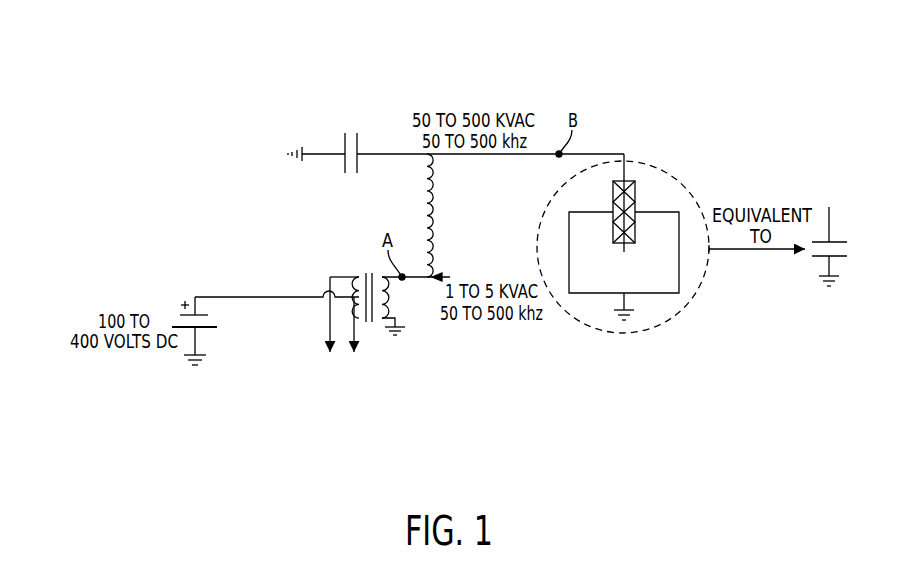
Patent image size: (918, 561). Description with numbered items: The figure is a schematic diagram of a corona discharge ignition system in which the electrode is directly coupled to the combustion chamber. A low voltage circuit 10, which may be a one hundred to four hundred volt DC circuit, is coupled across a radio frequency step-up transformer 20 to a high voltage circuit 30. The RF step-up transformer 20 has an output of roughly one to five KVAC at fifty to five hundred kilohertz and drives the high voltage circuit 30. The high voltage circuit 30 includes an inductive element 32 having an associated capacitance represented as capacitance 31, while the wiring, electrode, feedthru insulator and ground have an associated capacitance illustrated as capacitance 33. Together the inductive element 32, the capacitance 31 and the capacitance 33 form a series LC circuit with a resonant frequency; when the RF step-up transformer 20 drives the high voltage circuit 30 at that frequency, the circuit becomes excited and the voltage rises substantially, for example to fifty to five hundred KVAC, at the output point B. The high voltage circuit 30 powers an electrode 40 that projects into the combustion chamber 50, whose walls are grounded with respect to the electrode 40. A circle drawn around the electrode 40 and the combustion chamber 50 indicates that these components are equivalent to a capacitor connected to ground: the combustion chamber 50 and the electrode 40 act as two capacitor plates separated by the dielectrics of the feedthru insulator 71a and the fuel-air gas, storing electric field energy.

The low voltage circuit 10 is at (276, 393).
The radio frequency step-up transformer 20 is at (370, 272).
The high voltage circuit 30 is at (460, 82).
The capacitance 31 is at (343, 140).
The inductive element 32 is at (432, 200).
The capacitance 33 is at (840, 243).
The electrode 40 is at (624, 250).
The combustion chamber 50 is at (602, 293).
The feedthru insulator 71a is at (613, 190).